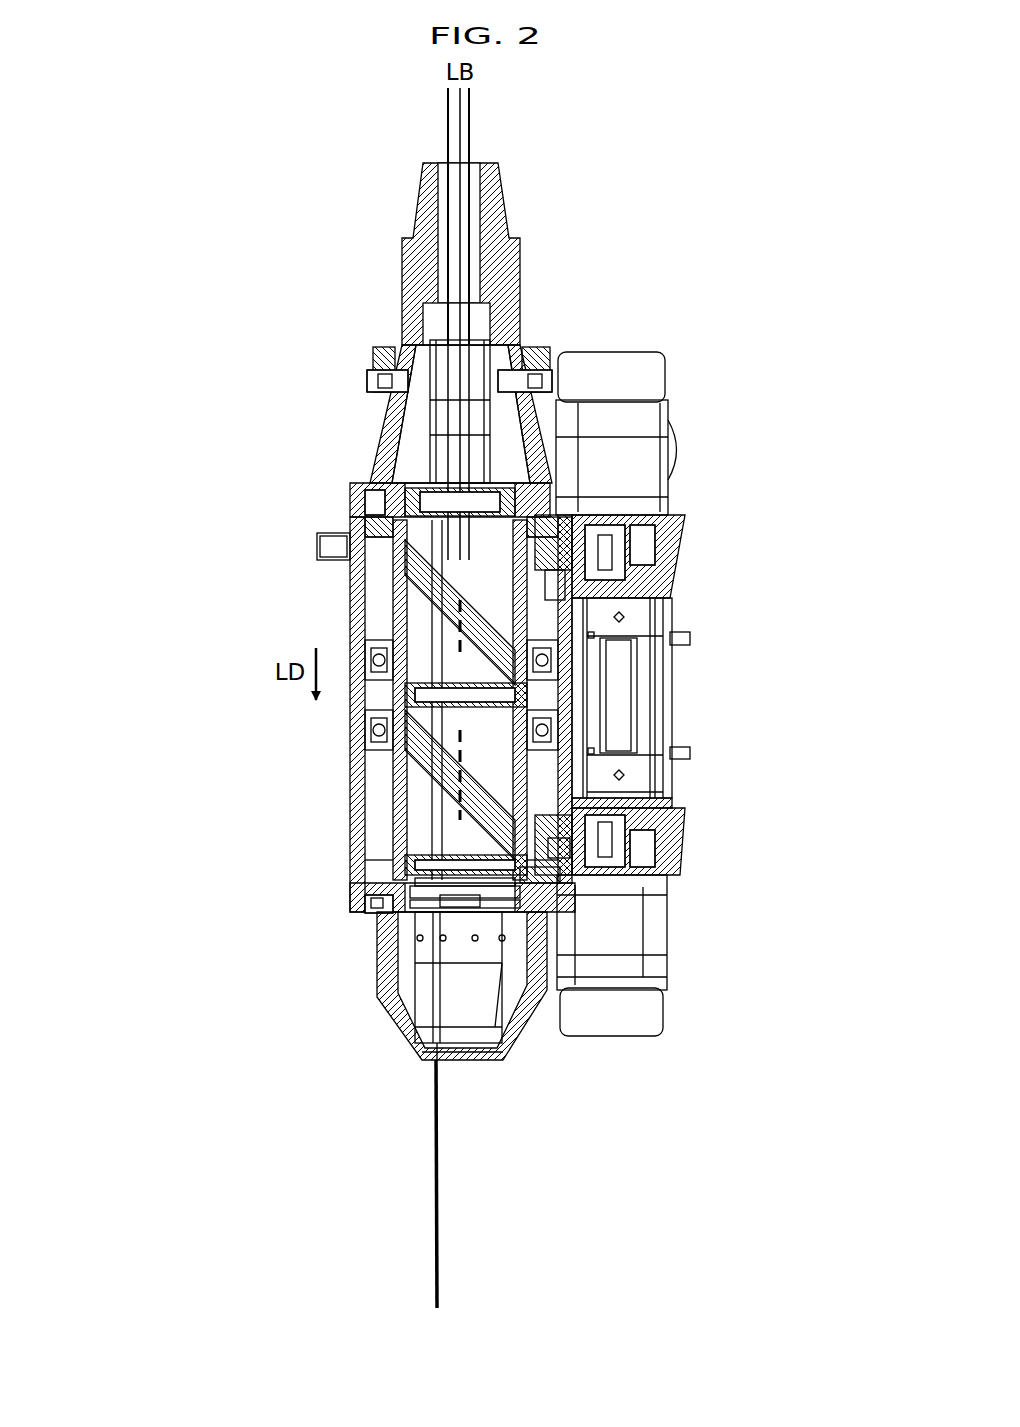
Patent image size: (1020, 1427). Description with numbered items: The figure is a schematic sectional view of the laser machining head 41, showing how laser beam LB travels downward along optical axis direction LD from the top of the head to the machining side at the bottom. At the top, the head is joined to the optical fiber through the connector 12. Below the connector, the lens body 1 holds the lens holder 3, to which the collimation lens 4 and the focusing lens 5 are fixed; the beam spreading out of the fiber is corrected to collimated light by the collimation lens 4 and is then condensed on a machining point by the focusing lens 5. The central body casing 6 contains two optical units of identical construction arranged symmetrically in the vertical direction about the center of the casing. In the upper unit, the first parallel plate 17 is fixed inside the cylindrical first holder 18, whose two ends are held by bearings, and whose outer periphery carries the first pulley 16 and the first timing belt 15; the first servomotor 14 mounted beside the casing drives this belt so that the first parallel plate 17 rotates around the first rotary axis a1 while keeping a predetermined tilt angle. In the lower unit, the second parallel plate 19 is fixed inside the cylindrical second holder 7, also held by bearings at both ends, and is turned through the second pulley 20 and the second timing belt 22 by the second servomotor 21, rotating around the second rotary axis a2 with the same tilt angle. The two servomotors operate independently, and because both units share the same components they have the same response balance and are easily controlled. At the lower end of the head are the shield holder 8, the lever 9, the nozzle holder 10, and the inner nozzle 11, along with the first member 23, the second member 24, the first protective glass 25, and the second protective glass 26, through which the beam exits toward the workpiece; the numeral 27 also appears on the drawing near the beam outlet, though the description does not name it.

The laser machining head 41 is at (318, 125).
The lens body 1 is at (400, 332).
The lens holder 3 is at (415, 433).
The collimation lens 4 is at (415, 487).
The focusing lens 5 is at (418, 513).
The body casing 6 is at (352, 607).
The second holder 7 is at (385, 782).
The shield holder 8 is at (358, 870).
The lever 9 is at (362, 906).
The nozzle holder 10 is at (377, 958).
The inner nozzle 11 is at (405, 1012).
The connector 12 is at (518, 214).
The first servomotor 14 is at (660, 355).
The first timing belt 15 is at (545, 553).
The first pulley 16 is at (643, 545).
The first parallel plate 17 is at (478, 600).
The first holder 18 is at (532, 626).
The first rotary axis a1 is at (462, 645).
The second parallel plate 19 is at (478, 762).
The second rotary axis a2 is at (463, 777).
The second pulley 20 is at (655, 826).
The second servomotor 21 is at (658, 905).
The second timing belt 22 is at (562, 846).
The first member 23 is at (519, 893).
The second member 24 is at (506, 907).
The first protective glass 25 is at (485, 887).
The second protective glass 26 is at (470, 903).
The beam outlet 27 is at (408, 1060).